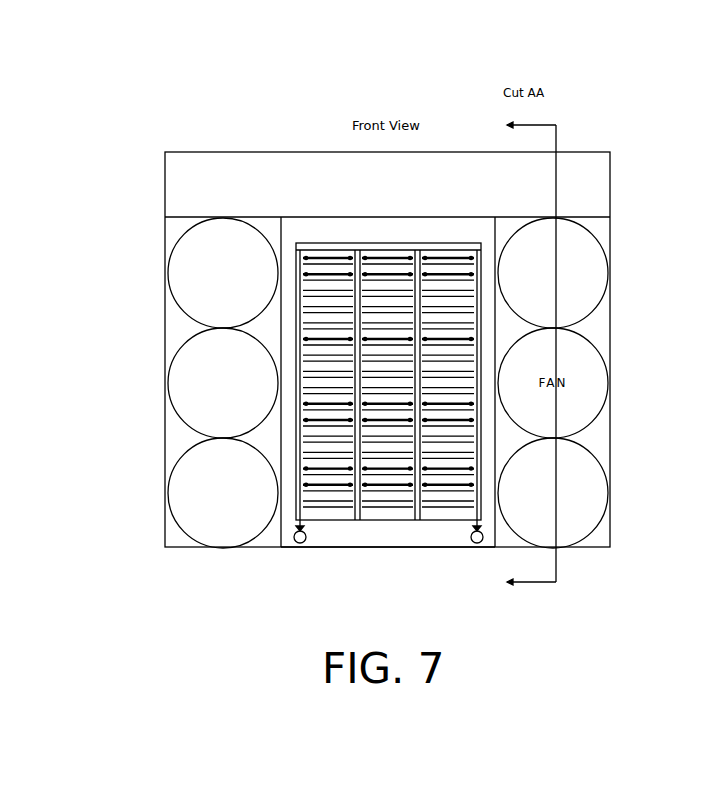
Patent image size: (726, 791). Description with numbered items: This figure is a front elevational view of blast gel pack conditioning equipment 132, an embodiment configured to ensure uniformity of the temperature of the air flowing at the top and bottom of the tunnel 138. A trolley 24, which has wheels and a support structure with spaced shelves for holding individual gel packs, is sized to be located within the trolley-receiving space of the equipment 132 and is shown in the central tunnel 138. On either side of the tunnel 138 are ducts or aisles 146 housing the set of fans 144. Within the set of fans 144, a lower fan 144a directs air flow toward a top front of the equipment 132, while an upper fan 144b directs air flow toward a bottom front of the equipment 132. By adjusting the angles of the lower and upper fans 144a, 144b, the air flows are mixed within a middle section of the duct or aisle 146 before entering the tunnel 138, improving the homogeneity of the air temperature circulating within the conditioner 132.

The blast gel pack conditioning equipment 132 is at (221, 152).
The set of fans 144 is at (170, 262).
The lower fan 144a is at (603, 497).
The upper fan 144b is at (597, 257).
The ducts or aisles 146 is at (177, 535).
The trolley 24 is at (439, 522).
The tunnel 138 is at (358, 538).